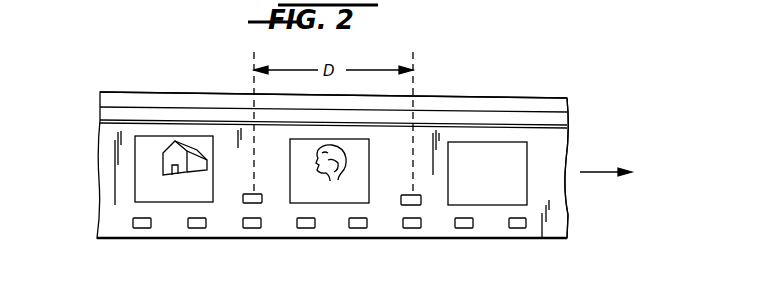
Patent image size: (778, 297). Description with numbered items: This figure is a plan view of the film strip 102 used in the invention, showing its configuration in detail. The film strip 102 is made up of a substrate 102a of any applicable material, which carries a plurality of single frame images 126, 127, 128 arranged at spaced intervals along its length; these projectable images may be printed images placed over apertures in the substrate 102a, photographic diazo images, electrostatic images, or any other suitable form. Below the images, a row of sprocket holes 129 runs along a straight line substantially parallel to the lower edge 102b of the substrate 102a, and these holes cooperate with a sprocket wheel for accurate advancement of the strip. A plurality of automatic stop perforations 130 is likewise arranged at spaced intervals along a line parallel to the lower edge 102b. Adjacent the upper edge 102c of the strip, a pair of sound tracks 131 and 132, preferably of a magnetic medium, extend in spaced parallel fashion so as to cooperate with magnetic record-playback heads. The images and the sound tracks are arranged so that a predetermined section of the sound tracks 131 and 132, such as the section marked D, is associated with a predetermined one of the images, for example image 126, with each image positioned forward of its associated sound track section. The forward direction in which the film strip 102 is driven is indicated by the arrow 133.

The film strip 102 is at (519, 76).
The substrate 102a is at (549, 168).
The lower edge 102b is at (97, 238).
The upper edge 102c is at (196, 82).
The single frame image 126 is at (523, 158).
The single frame image 127 is at (370, 156).
The single frame image 128 is at (135, 153).
The sprocket holes 129 is at (352, 229).
The automatic stop perforations 130 is at (266, 186).
The sound track 131 is at (530, 110).
The sound track 132 is at (422, 124).
The arrow 133 is at (596, 172).